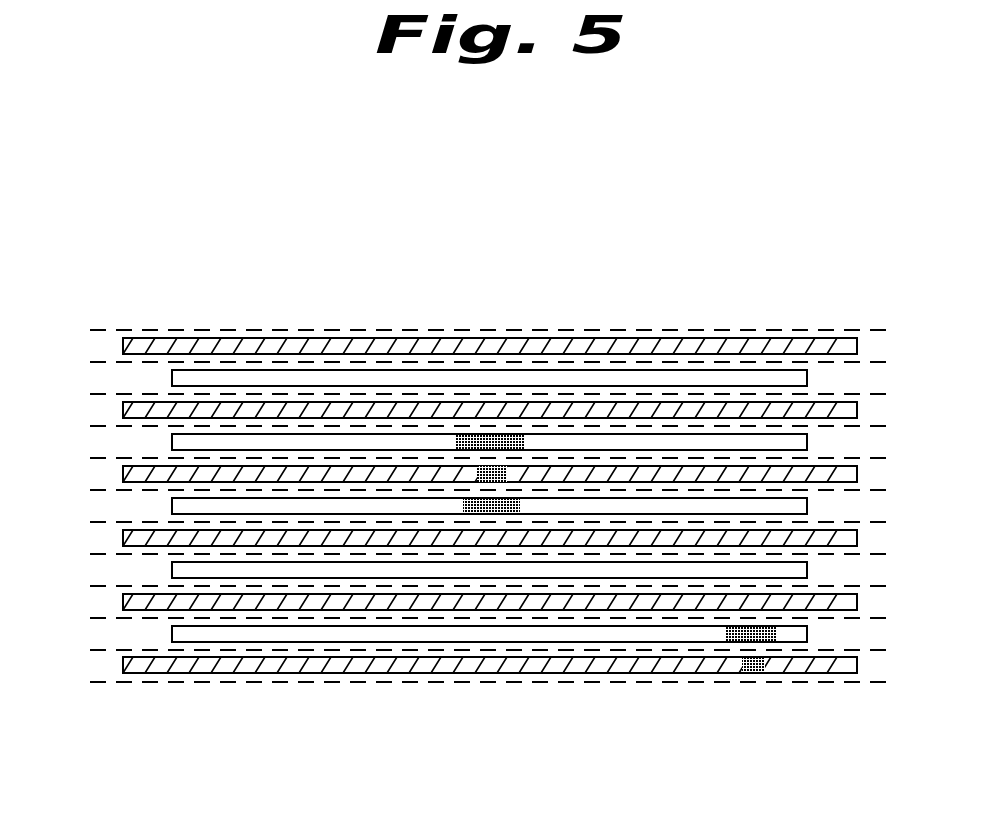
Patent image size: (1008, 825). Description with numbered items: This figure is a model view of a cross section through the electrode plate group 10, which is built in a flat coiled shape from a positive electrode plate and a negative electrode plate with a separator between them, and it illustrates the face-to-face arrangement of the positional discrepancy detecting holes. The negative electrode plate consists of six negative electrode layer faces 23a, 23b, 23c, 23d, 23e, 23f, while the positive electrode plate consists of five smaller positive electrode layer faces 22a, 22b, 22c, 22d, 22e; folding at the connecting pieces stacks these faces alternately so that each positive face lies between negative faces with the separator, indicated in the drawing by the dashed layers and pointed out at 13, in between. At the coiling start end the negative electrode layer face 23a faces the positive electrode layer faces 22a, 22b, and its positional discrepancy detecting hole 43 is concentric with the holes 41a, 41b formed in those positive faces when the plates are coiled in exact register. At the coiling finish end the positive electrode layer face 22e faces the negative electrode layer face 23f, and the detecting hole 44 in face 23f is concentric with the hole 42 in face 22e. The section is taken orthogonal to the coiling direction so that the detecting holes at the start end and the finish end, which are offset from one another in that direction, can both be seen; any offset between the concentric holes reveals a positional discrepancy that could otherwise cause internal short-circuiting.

The electrode plate group 10 is at (833, 245).
The separator 13 is at (148, 328).
The positive electrode layer face 22a is at (257, 503).
The positive electrode layer face 22b is at (658, 442).
The positive electrode layer face 22c is at (187, 572).
The positive electrode layer face 22d is at (590, 378).
The positive electrode layer face 22e is at (588, 632).
The negative electrode layer face 23a is at (737, 475).
The negative electrode layer face 23b is at (293, 542).
The negative electrode layer face 23c is at (443, 405).
The negative electrode layer face 23d is at (835, 605).
The negative electrode layer face 23e is at (545, 336).
The negative electrode layer face 23f is at (537, 667).
The positional discrepancy detecting hole 41a is at (473, 513).
The positional discrepancy detecting hole 41b is at (480, 437).
The positional discrepancy detecting hole 42 is at (727, 637).
The positional discrepancy detecting hole 43 is at (477, 480).
The positional discrepancy detecting hole 44 is at (753, 665).